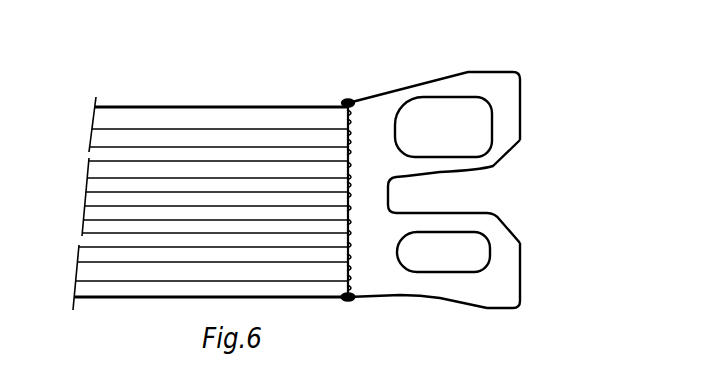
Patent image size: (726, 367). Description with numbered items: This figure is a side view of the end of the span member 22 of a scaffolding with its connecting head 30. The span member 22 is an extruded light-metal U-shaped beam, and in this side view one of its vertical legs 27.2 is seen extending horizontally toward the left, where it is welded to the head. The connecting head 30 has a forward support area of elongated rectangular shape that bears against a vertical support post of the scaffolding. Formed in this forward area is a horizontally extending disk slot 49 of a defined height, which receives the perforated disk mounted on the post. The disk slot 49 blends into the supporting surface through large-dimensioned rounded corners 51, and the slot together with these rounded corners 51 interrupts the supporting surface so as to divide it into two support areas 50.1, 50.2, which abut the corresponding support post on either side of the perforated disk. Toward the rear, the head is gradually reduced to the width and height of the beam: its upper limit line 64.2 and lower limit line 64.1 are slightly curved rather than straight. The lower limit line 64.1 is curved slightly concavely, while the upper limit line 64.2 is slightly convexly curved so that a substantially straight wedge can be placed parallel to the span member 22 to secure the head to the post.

The span member 22 is at (140, 90).
The vertical leg 27.2 is at (166, 268).
The connecting head 30 is at (382, 77).
The disk slot 49 is at (472, 197).
The support area 50.1 is at (521, 110).
The support area 50.2 is at (521, 278).
The rounded corners 51 is at (503, 157).
The lower limit line 64.1 is at (430, 298).
The upper limit line 64.2 is at (435, 82).